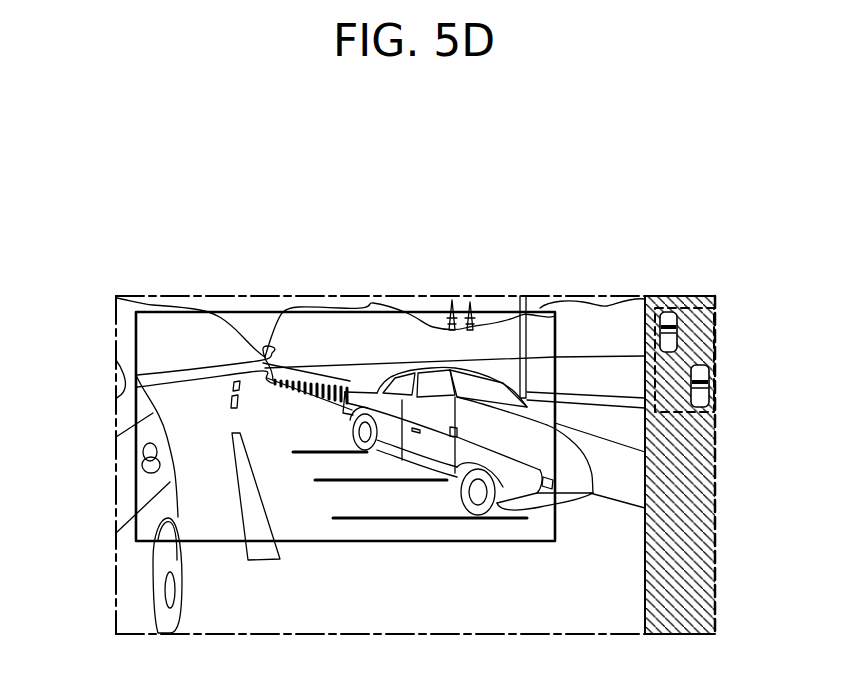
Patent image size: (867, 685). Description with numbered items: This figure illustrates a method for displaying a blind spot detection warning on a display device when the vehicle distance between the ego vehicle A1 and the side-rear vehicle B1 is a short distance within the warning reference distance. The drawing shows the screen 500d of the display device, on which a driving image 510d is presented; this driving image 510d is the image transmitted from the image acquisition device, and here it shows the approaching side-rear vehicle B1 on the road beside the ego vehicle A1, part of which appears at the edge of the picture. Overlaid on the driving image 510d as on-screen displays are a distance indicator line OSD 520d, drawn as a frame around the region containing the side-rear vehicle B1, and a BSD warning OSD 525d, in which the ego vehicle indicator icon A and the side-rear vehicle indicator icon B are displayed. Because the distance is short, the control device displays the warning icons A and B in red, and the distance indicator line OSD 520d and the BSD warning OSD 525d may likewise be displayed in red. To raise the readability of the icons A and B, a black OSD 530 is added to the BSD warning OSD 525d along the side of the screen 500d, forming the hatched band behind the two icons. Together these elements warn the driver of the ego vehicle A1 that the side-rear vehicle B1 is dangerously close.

The screen 500d is at (503, 297).
The driving image 510d is at (616, 333).
The distance indicator line OSD 520d is at (144, 312).
The BSD warning OSD 525d is at (688, 412).
The black OSD 530 is at (687, 566).
The ego vehicle indicator icon A is at (678, 322).
The side-rear vehicle indicator icon B is at (709, 383).
The ego vehicle A1 is at (135, 583).
The side-rear vehicle B1 is at (432, 380).